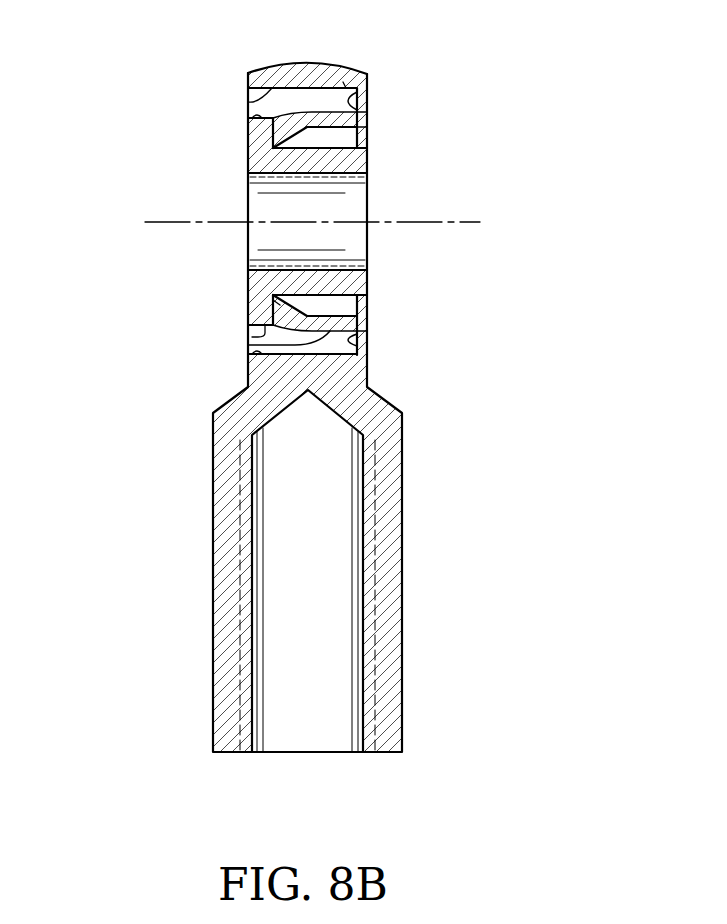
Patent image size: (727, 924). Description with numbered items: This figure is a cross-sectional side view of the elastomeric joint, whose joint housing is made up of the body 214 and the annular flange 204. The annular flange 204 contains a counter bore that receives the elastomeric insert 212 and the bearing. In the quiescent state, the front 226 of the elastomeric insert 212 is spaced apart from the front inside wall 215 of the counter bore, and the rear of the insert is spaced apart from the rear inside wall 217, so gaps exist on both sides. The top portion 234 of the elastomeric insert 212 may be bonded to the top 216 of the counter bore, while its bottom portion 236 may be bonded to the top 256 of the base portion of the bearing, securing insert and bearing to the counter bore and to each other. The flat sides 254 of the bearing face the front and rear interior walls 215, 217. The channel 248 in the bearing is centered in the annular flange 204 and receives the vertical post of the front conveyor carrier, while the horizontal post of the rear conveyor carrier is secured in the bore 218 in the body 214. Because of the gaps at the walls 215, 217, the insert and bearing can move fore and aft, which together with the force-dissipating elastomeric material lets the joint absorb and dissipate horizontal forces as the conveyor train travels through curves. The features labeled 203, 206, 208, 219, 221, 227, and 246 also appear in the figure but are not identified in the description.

The connector head assembly 203 is at (117, 63).
The annular flange 204 is at (293, 62).
The retention tab 206 is at (368, 87).
The housing 208 is at (247, 80).
The elastomeric insert 212 is at (273, 131).
The body 214 is at (157, 407).
The front inside wall 215 is at (248, 102).
The top of the counter bore 216 is at (344, 84).
The rear inside wall 217 is at (252, 353).
The bore 218 is at (308, 732).
The hidden line 219 is at (368, 745).
The longitudinal axis 221 is at (437, 221).
The front of the elastomeric insert 226 is at (318, 112).
The spring arm 227 is at (248, 345).
The top portion of the elastomeric insert 234 is at (368, 118).
The bottom portion of the elastomeric insert 236 is at (274, 307).
The collar 246 is at (368, 162).
The channel 248 is at (277, 208).
The flat sides 254 is at (248, 113).
The top of the base portion 256 is at (274, 318).